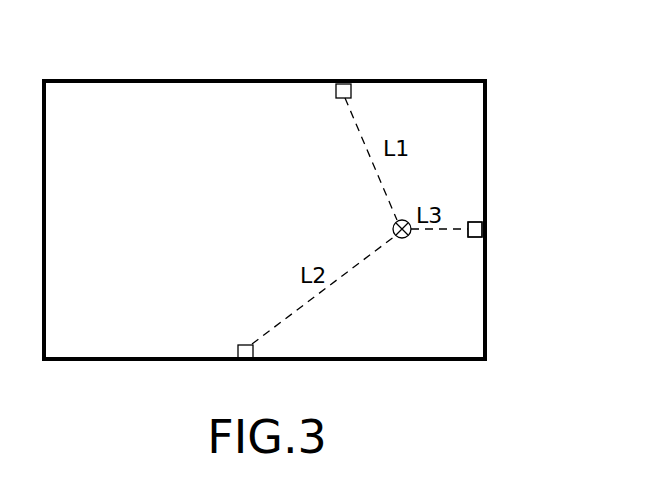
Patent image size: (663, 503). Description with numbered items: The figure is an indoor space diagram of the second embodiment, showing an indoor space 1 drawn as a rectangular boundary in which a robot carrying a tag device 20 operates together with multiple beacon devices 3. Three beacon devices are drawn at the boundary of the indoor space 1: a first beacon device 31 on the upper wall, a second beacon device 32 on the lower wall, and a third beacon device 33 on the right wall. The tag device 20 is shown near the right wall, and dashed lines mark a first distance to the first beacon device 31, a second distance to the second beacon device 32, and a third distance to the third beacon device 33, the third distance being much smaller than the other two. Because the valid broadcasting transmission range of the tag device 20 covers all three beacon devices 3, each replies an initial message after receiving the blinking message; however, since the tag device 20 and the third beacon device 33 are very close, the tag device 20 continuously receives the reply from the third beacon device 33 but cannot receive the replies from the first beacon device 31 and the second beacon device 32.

The indoor space 1 is at (148, 81).
The beacon devices 3 is at (476, 218).
The tag device 20 is at (403, 238).
The first beacon device 31 is at (336, 91).
The second beacon device 32 is at (237, 352).
The third beacon device 33 is at (482, 228).